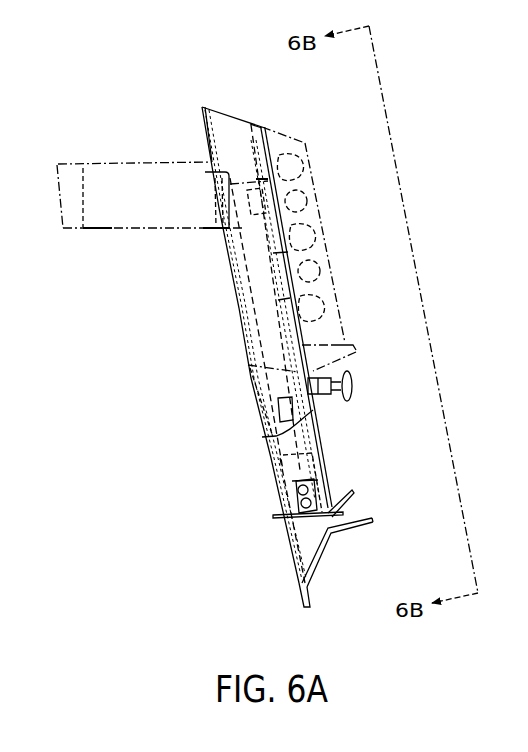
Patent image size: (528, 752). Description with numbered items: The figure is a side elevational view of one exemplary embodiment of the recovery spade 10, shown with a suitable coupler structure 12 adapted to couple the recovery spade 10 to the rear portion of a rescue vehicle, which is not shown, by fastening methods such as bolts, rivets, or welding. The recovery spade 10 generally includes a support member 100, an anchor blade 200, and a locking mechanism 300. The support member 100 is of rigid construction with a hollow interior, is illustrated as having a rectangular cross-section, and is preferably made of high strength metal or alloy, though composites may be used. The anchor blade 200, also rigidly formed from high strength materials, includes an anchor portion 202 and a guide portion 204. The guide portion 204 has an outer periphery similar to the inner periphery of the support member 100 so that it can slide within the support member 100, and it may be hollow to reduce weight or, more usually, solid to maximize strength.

The recovery spade 10 is at (126, 386).
The coupler structure 12 is at (152, 163).
The support member 100 is at (232, 287).
The anchor blade 200 is at (275, 527).
The anchor portion 202 is at (374, 520).
The guide portion 204 is at (292, 532).
The locking mechanism 300 is at (357, 380).